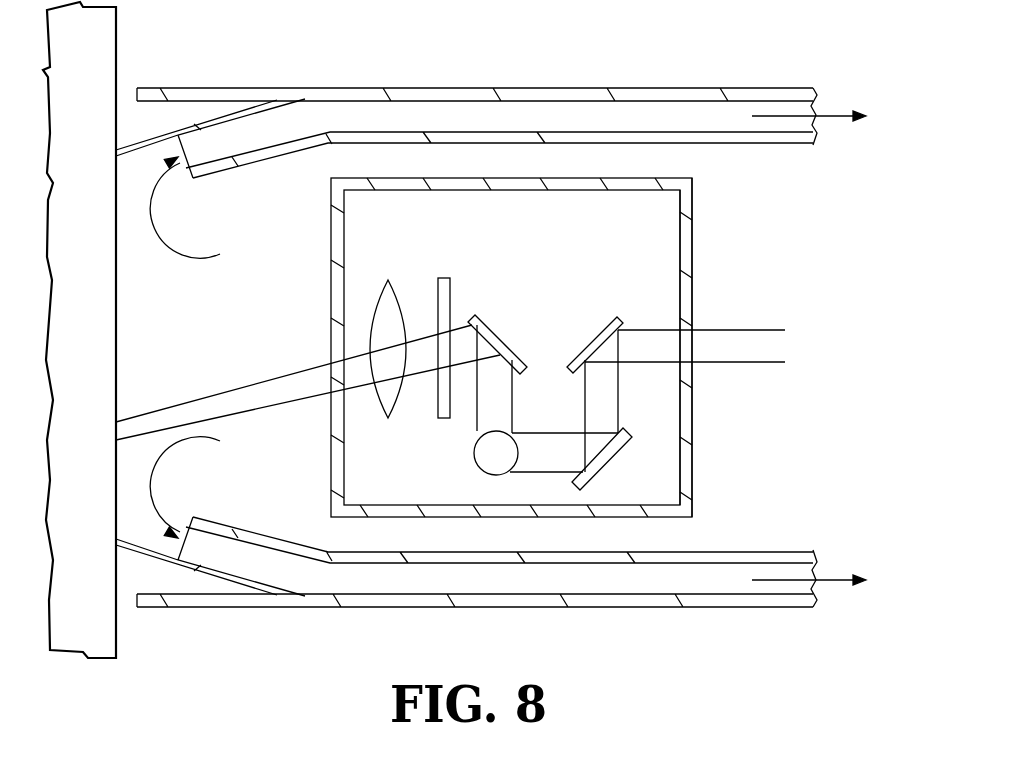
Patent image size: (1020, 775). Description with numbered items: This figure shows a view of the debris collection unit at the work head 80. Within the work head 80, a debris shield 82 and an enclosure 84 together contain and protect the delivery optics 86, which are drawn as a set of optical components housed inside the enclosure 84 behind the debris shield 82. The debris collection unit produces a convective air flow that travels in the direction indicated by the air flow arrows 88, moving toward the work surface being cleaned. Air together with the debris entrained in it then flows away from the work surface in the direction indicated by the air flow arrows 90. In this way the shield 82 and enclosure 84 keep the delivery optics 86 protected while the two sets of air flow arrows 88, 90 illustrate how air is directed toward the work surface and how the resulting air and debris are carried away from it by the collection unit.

The work head 80 is at (558, 70).
The debris shield 82 is at (332, 263).
The enclosure 84 is at (692, 240).
The delivery optics 86 is at (527, 310).
The air flow arrows 88 is at (290, 185).
The air flow arrows 90 is at (823, 114).